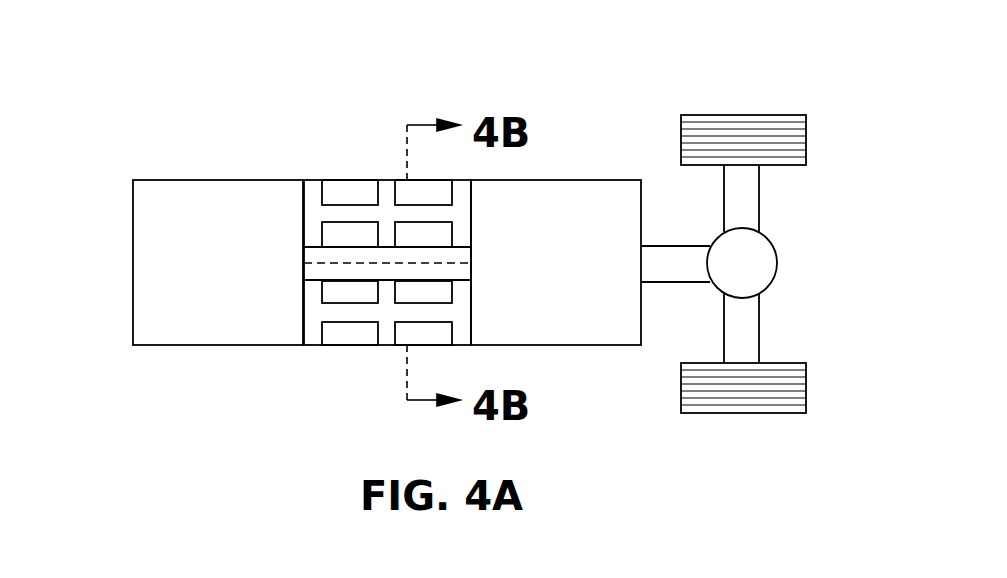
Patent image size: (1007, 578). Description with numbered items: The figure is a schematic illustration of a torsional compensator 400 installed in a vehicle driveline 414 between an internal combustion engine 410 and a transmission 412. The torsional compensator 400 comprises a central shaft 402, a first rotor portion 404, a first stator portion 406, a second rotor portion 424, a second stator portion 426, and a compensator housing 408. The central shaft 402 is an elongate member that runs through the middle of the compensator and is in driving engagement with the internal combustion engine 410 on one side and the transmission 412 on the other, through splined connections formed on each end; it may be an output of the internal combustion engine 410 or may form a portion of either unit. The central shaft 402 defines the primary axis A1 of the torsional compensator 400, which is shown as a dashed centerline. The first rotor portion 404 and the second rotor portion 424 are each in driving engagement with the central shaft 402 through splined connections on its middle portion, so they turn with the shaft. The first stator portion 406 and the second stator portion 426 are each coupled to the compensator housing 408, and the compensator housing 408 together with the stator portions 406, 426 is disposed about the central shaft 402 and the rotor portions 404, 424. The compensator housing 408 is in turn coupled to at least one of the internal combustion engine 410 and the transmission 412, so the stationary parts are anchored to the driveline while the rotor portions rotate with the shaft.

The torsional compensator 400 is at (300, 168).
The central shaft 402 is at (458, 253).
The first rotor portion 404 is at (441, 295).
The first stator portion 406 is at (441, 334).
The compensator housing 408 is at (313, 346).
The internal combustion engine 410 is at (133, 260).
The transmission 412 is at (593, 347).
The vehicle driveline 414 is at (600, 70).
The second rotor portion 424 is at (333, 292).
The second stator portion 426 is at (333, 333).
The primary axis A1 is at (320, 262).